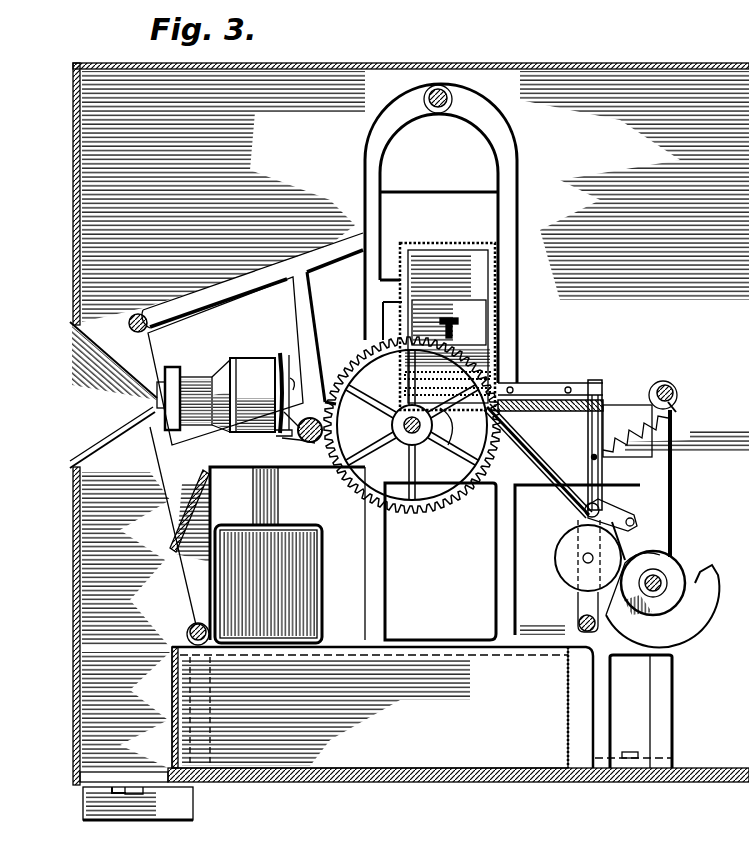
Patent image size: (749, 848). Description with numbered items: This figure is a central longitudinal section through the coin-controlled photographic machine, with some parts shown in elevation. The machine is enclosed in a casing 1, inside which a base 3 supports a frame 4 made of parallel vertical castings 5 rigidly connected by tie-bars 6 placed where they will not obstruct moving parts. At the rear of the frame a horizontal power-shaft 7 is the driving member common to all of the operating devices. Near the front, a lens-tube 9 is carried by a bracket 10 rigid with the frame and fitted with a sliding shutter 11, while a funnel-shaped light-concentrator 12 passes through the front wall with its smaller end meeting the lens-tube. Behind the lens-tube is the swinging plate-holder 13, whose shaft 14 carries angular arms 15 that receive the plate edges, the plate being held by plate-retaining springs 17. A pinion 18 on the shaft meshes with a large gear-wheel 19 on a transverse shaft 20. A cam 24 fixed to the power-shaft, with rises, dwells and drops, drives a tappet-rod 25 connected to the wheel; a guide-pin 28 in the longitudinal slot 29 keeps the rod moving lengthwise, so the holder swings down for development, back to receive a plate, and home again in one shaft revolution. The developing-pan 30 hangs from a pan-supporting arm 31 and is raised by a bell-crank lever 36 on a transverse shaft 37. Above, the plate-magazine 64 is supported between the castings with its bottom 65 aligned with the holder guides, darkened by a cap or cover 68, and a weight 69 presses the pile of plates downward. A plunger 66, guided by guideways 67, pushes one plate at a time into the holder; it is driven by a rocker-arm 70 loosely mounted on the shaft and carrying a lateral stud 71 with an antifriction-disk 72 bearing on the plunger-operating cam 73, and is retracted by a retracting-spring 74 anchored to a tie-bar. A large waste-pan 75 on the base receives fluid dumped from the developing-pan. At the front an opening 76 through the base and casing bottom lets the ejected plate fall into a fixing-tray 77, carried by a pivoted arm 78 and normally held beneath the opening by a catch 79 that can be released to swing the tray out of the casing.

The casing 1 is at (73, 147).
The base 3 is at (703, 770).
The frame 4 is at (322, 170).
The vertical castings 5 is at (518, 190).
The tie-bars 6 is at (436, 107).
The power-shaft 7 is at (668, 578).
The lens-tube 9 is at (235, 372).
The bracket 10 is at (157, 418).
The sliding shutter 11 is at (200, 414).
The light-concentrator 12 is at (113, 395).
The plate-holder 13 is at (282, 355).
The shaft 14 is at (311, 443).
The angular arms 15 is at (290, 438).
The plate-retaining springs 17 is at (294, 384).
The pinion 18 is at (311, 420).
The gear-wheel 19 is at (360, 352).
The transverse shaft 20 is at (422, 426).
The cam 24 is at (710, 620).
The tappet-rod 25 is at (548, 462).
The guide-pin 28 is at (584, 511).
The longitudinal slot 29 is at (622, 514).
The developing-pan 30 is at (312, 558).
The pan-supporting arm 31 is at (277, 505).
The bell-crank lever 36 is at (530, 628).
The transverse shaft 37 is at (578, 620).
The plate-magazine 64 is at (497, 308).
The bottom 65 is at (461, 430).
The plunger 66 is at (544, 405).
The guideways 67 is at (556, 395).
The cap or cover 68 is at (440, 248).
The weight 69 is at (497, 350).
The rocker-arm 70 is at (603, 468).
The lateral stud 71 is at (584, 556).
The antifriction-disk 72 is at (556, 566).
The plunger-operating cam 73 is at (648, 612).
The retracting-spring 74 is at (635, 431).
The waste-pan 75 is at (178, 690).
The opening 76 is at (136, 786).
The fixing-tray 77 is at (85, 805).
The arm 78 is at (82, 779).
The catch 79 is at (125, 786).